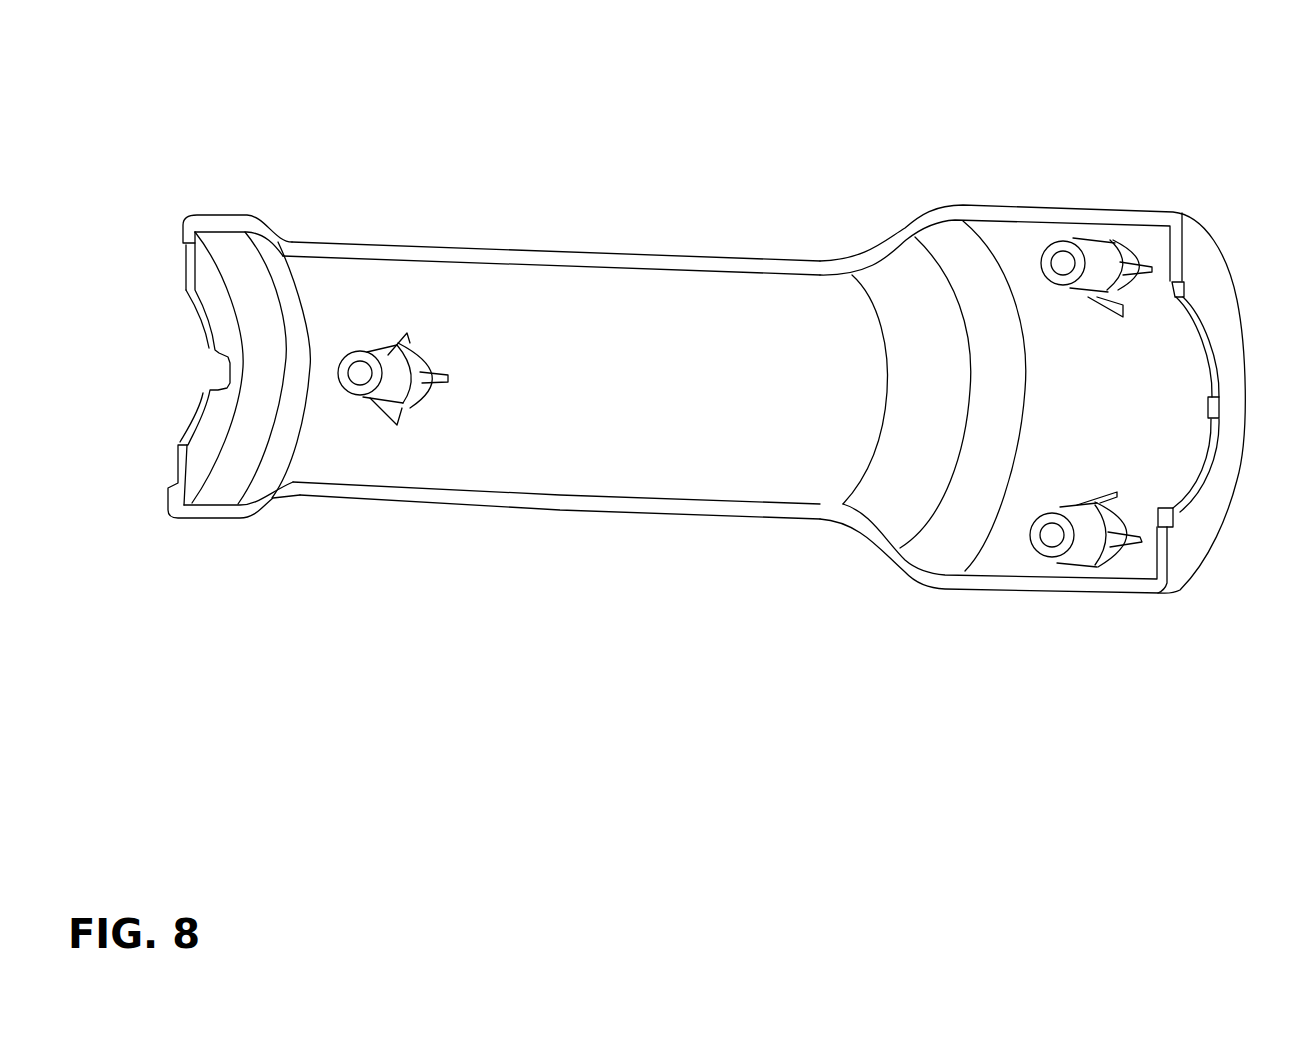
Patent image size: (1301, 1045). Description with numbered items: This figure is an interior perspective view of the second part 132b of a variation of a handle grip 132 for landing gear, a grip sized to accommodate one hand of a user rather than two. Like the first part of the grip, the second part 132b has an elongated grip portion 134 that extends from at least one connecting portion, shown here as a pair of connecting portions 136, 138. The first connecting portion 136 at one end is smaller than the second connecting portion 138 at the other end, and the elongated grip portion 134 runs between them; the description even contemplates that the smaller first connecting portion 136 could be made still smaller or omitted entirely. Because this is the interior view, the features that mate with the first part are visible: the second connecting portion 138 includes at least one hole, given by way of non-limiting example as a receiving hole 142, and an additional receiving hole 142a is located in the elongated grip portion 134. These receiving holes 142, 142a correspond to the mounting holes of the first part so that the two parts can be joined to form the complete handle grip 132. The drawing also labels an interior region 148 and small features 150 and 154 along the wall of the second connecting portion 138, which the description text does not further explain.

The handle grip 132 is at (350, 56).
The second part 132b is at (588, 184).
The elongated grip portion 134 is at (652, 270).
The first connecting portion 136 is at (225, 231).
The second connecting portion 138 is at (1093, 212).
The receiving hole 142 is at (1057, 262).
The additional receiving hole 142a is at (356, 372).
The interior cavity 148 is at (622, 397).
The tab 150 is at (1219, 405).
The slot 154 is at (1219, 416).